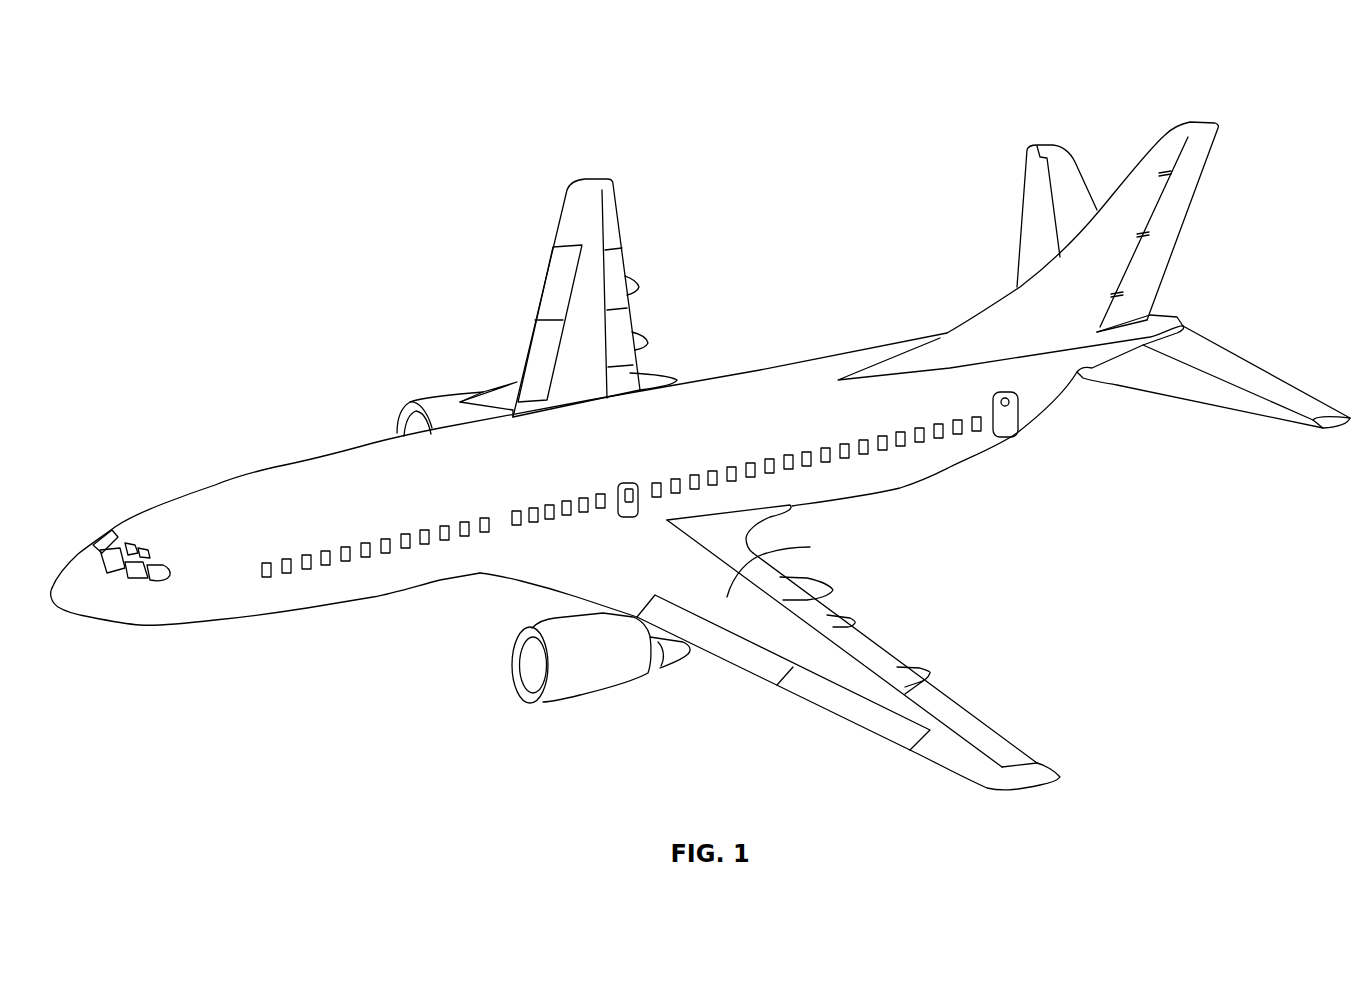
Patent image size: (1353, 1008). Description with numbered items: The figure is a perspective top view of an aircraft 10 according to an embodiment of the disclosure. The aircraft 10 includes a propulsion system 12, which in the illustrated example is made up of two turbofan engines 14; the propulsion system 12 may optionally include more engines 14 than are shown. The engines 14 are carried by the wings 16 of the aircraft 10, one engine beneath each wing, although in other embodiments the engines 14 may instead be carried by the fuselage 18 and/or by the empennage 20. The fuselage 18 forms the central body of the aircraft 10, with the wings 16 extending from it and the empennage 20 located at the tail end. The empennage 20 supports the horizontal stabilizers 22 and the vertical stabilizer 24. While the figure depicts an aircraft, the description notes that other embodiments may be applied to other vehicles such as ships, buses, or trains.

The aircraft 10 is at (226, 254).
The propulsion system 12 is at (483, 784).
The turbofan engines 14 is at (442, 402).
The wings 16 is at (599, 178).
The fuselage 18 is at (348, 582).
The empennage 20 is at (873, 312).
The horizontal stabilizers 22 is at (1047, 145).
The vertical stabilizer 24 is at (1198, 122).